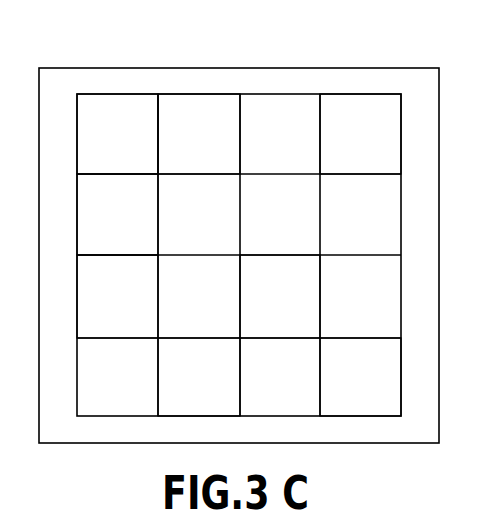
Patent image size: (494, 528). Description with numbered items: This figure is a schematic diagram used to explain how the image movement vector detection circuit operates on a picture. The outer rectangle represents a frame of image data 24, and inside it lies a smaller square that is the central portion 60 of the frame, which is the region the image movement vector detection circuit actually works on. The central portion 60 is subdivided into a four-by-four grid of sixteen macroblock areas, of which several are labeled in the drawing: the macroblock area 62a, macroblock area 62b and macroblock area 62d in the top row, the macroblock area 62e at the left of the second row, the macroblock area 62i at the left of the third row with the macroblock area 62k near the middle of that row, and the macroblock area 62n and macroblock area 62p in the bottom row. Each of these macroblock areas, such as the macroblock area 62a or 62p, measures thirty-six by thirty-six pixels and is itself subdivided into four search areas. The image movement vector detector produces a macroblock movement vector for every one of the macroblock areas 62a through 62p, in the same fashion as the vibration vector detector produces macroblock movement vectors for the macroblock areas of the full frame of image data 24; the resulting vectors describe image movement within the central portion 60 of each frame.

The frame of image data 24 is at (432, 43).
The central portion 60 is at (405, 173).
The macroblock area 62a is at (142, 147).
The macroblock area 62b is at (176, 147).
The macroblock area 62d is at (338, 147).
The macroblock area 62e is at (142, 229).
The macroblock area 62i is at (142, 310).
The macroblock area 62k is at (303, 308).
The macroblock area 62n is at (225, 389).
The macroblock area 62p is at (392, 392).